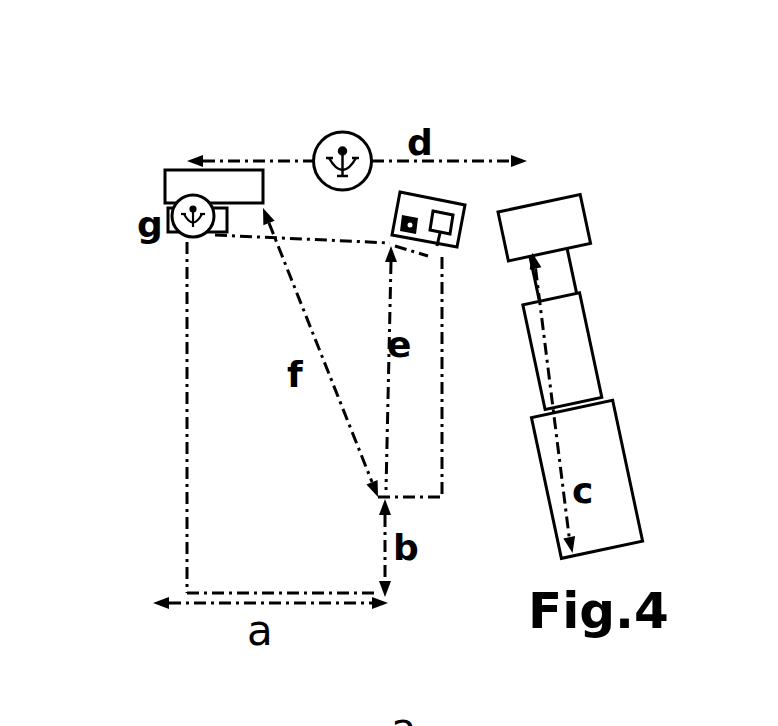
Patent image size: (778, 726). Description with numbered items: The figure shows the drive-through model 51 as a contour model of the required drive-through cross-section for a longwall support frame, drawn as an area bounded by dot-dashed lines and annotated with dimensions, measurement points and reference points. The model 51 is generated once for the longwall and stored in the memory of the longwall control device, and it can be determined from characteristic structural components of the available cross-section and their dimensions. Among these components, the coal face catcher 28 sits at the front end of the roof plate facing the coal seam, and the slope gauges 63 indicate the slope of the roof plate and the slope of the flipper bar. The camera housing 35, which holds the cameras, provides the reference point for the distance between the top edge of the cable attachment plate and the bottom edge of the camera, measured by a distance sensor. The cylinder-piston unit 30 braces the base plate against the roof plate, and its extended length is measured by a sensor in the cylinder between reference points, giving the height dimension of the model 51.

The coal face catcher 28 is at (216, 156).
The cylinder-piston unit 30 is at (597, 387).
The camera housing 35 is at (469, 162).
The drive-through model 51 is at (318, 485).
The slope gauge 63 is at (87, 127).